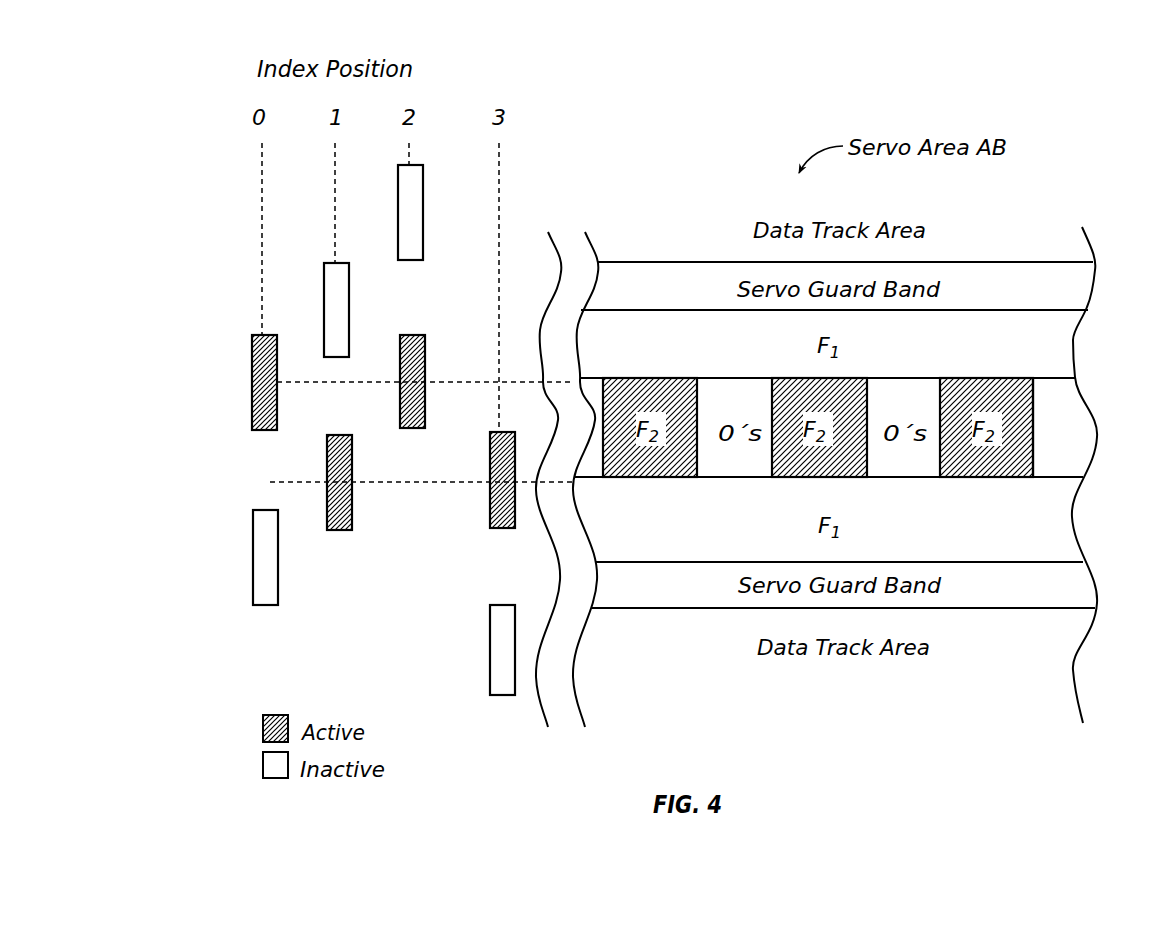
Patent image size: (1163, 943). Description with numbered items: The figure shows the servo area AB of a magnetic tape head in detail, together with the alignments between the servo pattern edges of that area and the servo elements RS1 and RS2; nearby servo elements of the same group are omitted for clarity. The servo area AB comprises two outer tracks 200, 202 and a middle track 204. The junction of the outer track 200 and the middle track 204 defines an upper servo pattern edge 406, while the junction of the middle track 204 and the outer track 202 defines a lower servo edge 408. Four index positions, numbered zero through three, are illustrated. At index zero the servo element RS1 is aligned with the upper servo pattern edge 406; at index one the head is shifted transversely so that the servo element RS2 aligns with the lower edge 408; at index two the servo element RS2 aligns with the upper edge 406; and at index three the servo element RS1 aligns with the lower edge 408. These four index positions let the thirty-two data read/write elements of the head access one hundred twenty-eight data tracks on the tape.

The outer track 200 is at (1058, 352).
The outer track 202 is at (1060, 540).
The middle track 204 is at (1068, 428).
The upper servo pattern edge 406 is at (902, 378).
The lower servo edge 408 is at (902, 477).
The servo element RS1 is at (409, 165).
The servo element RS2 is at (400, 420).